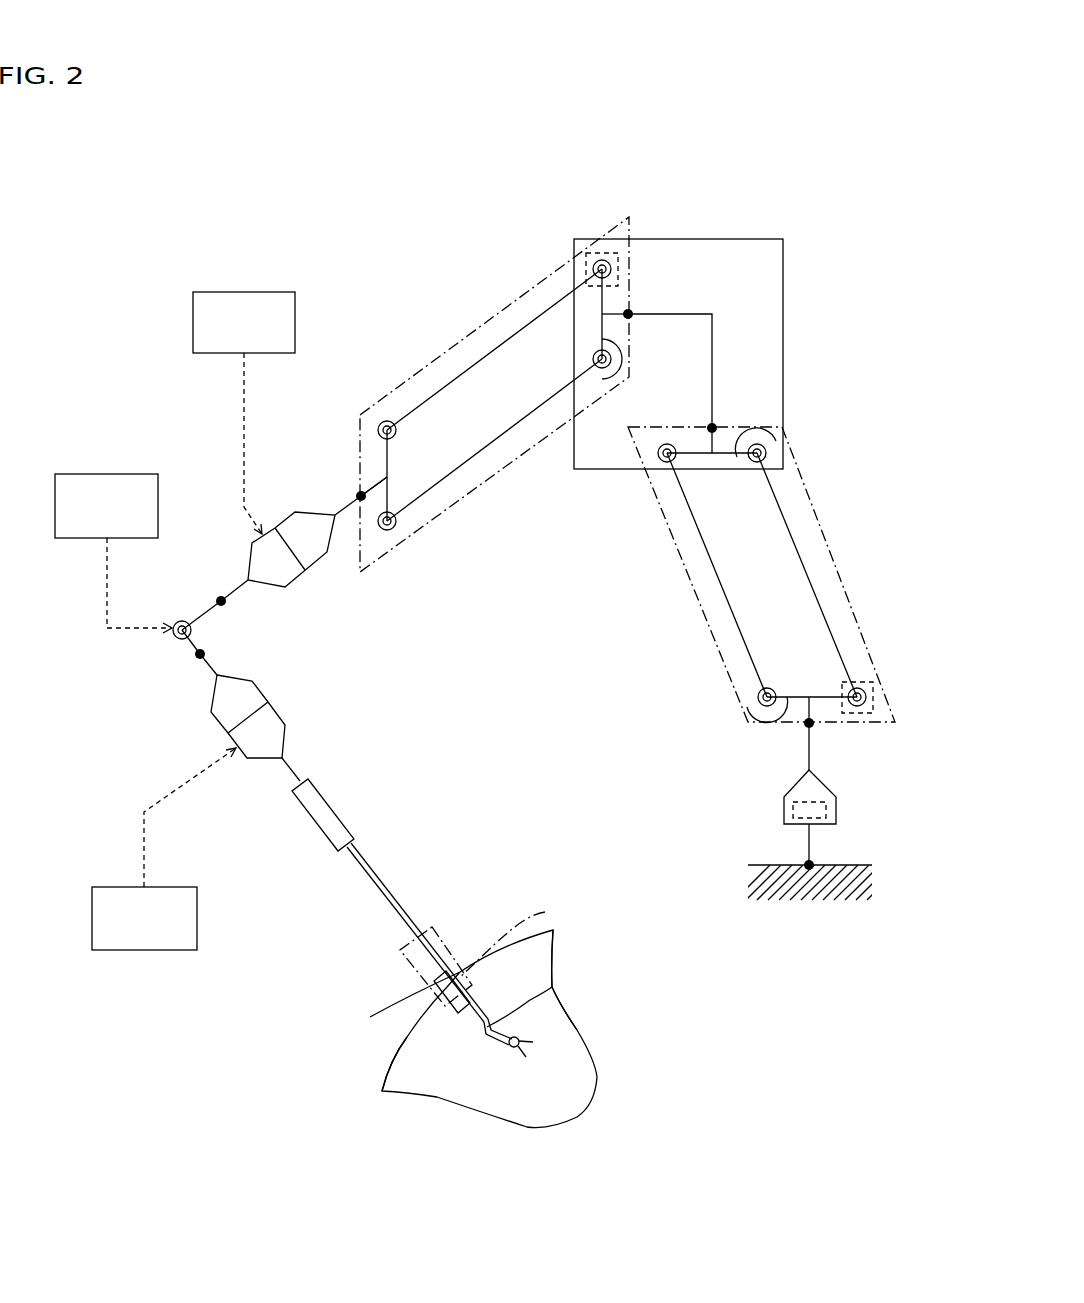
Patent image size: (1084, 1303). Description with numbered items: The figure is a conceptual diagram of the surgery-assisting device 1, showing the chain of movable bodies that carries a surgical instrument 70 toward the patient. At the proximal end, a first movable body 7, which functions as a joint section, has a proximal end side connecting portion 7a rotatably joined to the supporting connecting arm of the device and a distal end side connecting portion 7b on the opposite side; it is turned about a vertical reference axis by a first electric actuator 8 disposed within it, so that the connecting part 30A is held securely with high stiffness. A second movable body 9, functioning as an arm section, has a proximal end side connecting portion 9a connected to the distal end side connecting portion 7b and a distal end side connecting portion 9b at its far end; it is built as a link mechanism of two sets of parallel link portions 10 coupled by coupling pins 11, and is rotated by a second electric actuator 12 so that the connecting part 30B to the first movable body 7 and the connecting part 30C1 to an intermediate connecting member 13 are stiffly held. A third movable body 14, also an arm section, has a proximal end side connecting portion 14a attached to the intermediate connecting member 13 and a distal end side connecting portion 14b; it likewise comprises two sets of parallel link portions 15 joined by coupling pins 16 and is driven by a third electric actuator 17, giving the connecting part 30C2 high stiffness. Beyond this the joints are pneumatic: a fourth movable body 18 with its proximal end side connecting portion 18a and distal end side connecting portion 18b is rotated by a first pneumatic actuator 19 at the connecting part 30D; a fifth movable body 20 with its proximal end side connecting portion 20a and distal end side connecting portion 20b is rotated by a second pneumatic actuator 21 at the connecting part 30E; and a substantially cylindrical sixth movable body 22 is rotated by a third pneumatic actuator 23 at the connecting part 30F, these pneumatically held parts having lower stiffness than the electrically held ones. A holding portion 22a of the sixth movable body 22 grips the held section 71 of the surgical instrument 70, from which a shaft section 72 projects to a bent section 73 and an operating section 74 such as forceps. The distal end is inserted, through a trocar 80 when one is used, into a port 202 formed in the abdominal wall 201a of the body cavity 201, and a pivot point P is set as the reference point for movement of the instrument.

The surgery-assisting device 1 is at (832, 79).
The first movable body 7 is at (837, 807).
The proximal end side connecting portion 7a is at (812, 840).
The distal end side connecting portion 7b is at (812, 750).
The first electric actuator 8 is at (783, 815).
The second movable body 9 is at (833, 558).
The proximal end side connecting portion 9a is at (797, 703).
The distal end side connecting portion 9b is at (742, 448).
The parallel link portions 10 is at (778, 440).
The coupling pins 11 is at (767, 462).
The second electric actuator 12 is at (862, 682).
The intermediate connecting member 13 is at (785, 293).
The third movable body 14 is at (486, 308).
The proximal end side connecting portion 14a is at (630, 302).
The distal end side connecting portion 14b is at (360, 480).
The parallel link portions 15 is at (527, 322).
The coupling pins 16 is at (594, 257).
The third electric actuator 17 is at (597, 257).
The fourth movable body 18 is at (295, 581).
The proximal end side connecting portion 18a is at (336, 514).
The distal end side connecting portion 18b is at (242, 587).
The first pneumatic actuator 19 is at (241, 290).
The fifth movable body 20 is at (177, 638).
The proximal end side connecting portion 20a is at (212, 610).
The distal end side connecting portion 20b is at (190, 642).
The second pneumatic actuator 21 is at (75, 473).
The sixth movable body 22 is at (278, 712).
The holding portion 22a is at (297, 768).
The third pneumatic actuator 23 is at (127, 952).
The connecting part 30A is at (815, 863).
The connecting part 30B is at (807, 727).
The connecting part 30C1 is at (714, 426).
The connecting part 30C2 is at (630, 310).
The connecting part 30D is at (359, 491).
The connecting part 30E is at (223, 605).
The connecting part 30F is at (198, 660).
The surgical instrument 70 is at (402, 986).
The held section 71 is at (332, 820).
The shaft section 72 is at (357, 868).
The bent section 73 is at (553, 988).
The operating section 74 is at (515, 1050).
The trocar 80 is at (453, 947).
The body cavity 201 is at (567, 1043).
The abdominal wall 201a is at (390, 1063).
The port 202 is at (445, 995).
The pivot point P is at (513, 934).